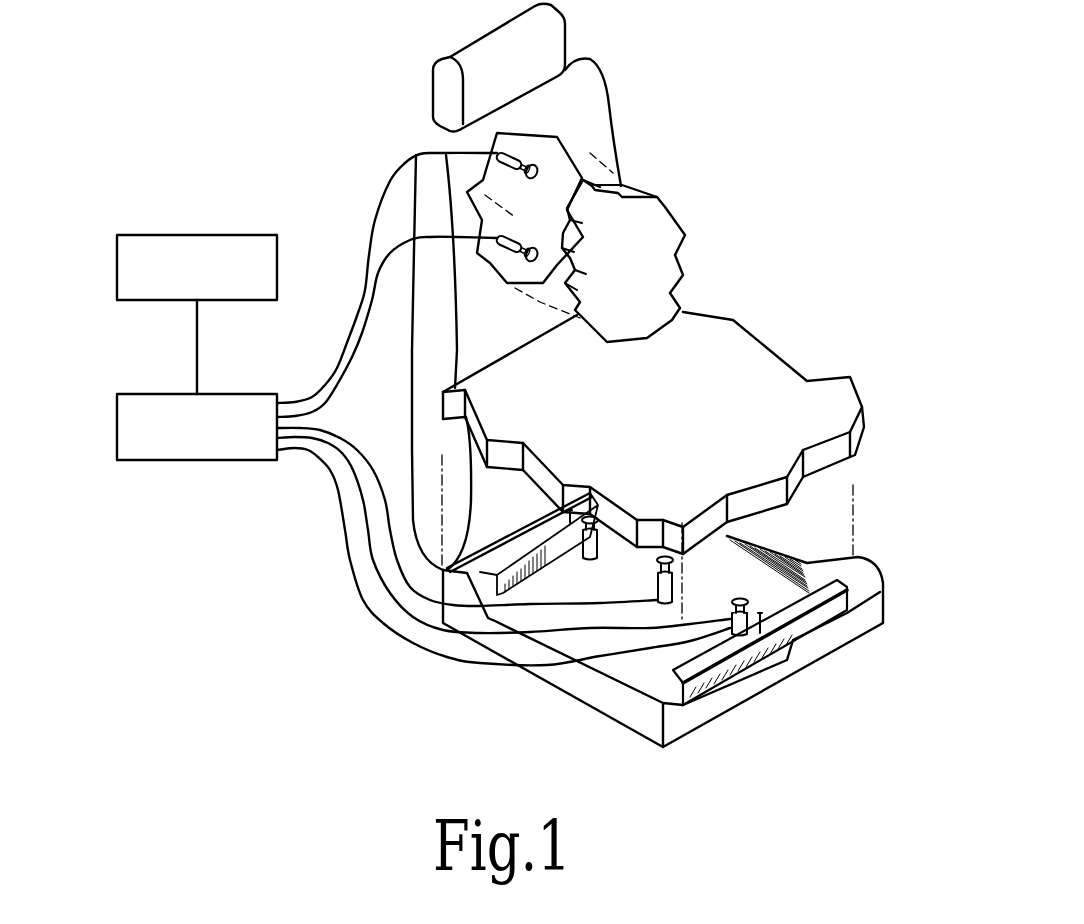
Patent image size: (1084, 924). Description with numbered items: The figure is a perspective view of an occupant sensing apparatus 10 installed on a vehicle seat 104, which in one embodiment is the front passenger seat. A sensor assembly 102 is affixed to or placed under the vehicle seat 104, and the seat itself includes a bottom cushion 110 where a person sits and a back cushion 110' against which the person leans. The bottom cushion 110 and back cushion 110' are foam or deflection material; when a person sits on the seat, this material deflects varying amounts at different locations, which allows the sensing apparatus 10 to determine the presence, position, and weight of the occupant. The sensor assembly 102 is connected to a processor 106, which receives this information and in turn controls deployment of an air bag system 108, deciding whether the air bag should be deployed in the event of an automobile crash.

The occupant sensing apparatus 10 is at (893, 297).
The sensor assembly 102 is at (647, 657).
The vehicle seat 104 is at (753, 273).
The processor 106 is at (130, 420).
The air bag system 108 is at (137, 262).
The bottom cushion 110 is at (653, 420).
The back cushion 110' is at (604, 237).